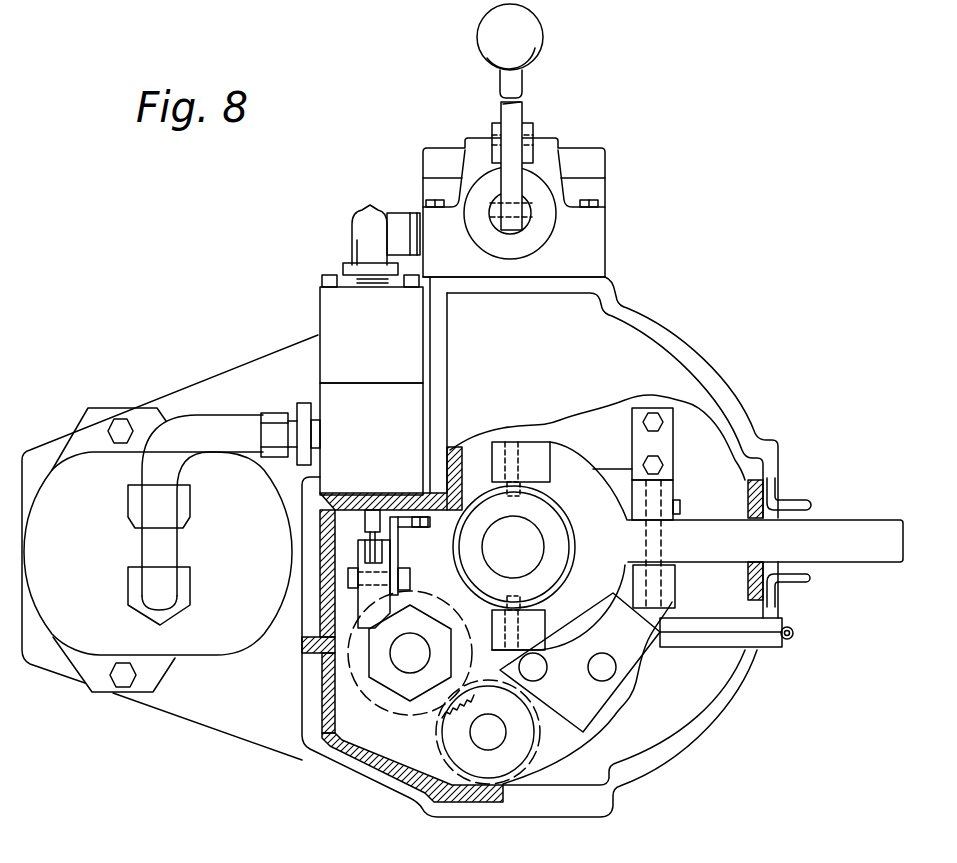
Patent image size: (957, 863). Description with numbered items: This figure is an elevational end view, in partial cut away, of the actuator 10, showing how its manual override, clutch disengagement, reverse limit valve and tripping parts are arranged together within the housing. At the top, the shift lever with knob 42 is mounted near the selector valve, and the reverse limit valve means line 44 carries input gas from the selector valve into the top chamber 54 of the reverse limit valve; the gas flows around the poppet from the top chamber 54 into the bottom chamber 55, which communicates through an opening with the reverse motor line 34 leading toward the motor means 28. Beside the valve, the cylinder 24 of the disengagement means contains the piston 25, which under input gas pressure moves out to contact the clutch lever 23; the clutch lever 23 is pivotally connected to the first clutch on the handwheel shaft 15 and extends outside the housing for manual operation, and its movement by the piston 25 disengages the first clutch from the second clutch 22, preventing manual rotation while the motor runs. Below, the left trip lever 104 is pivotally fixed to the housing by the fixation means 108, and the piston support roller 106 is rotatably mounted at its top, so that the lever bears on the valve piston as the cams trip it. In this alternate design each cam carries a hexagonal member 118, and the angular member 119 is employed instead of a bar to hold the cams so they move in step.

The actuator 10 is at (681, 209).
The shift lever with knob 42 is at (517, 105).
The reverse limit valve means line 44 is at (362, 224).
The top chamber 54 is at (335, 303).
The bottom chamber 55 is at (405, 407).
The reverse motor line 34 is at (186, 430).
The motor means 28 is at (95, 547).
The piston 25 is at (573, 452).
The handwheel shaft 15 is at (527, 543).
The cylinder 24 is at (622, 470).
The clutch lever 23 is at (840, 518).
The second clutch 22 is at (677, 585).
The piston support roller 106 is at (362, 550).
The fixation means 108 is at (346, 578).
The left trip lever 104 is at (365, 603).
The angular member 119 is at (337, 660).
The hexagonal member 118 is at (395, 677).